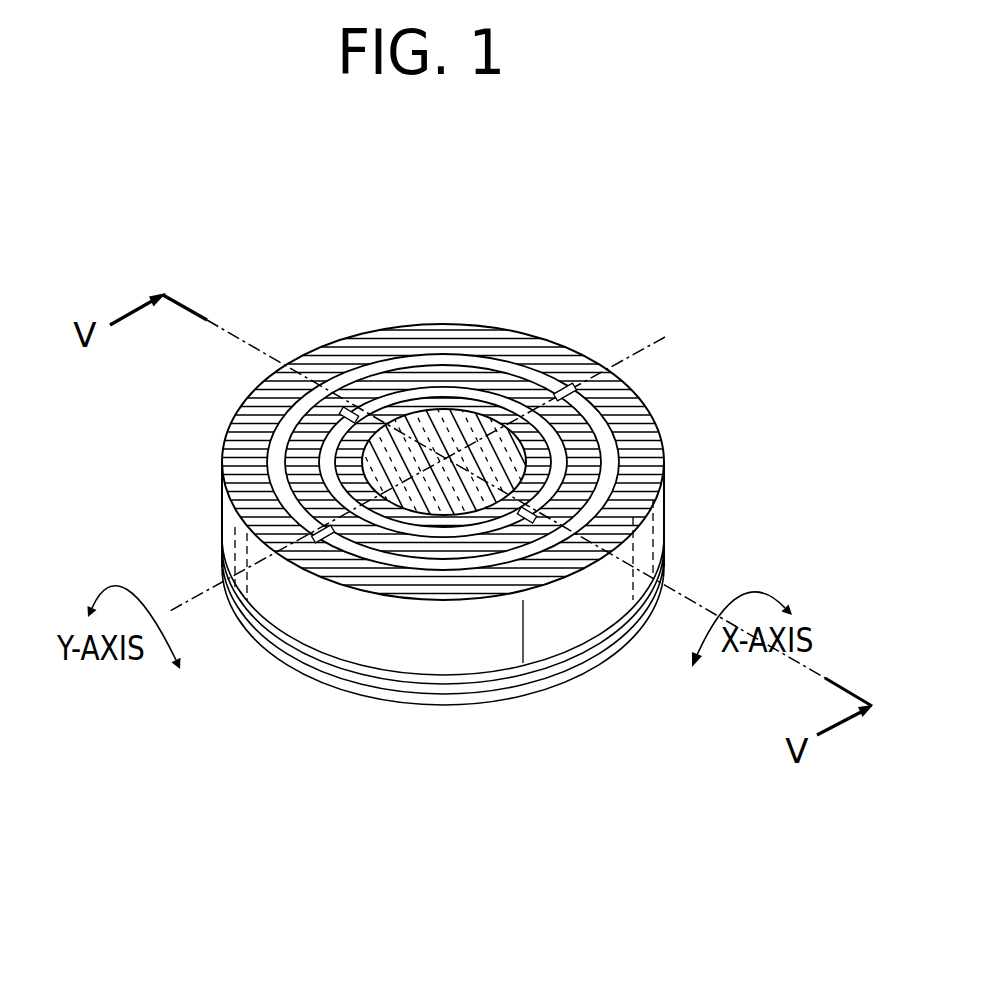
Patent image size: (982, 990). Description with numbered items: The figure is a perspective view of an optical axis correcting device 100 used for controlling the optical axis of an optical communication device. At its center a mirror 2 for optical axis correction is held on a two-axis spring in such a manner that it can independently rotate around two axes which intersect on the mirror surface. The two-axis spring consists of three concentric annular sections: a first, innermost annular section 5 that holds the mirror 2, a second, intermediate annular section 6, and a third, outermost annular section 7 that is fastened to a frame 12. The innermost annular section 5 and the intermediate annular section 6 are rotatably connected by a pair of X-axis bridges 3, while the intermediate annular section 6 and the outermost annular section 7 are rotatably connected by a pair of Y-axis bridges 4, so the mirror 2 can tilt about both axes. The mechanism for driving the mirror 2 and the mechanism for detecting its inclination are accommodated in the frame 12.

The optical axis correcting device 100 is at (463, 745).
The mirror 2 is at (530, 445).
The X-axis bridges 3 is at (285, 433).
The Y-axis bridges 4 is at (623, 415).
The first, innermost annular section 5 is at (462, 405).
The second, intermediate annular section 6 is at (422, 380).
The third, outermost annular section 7 is at (367, 347).
The frame 12 is at (553, 348).